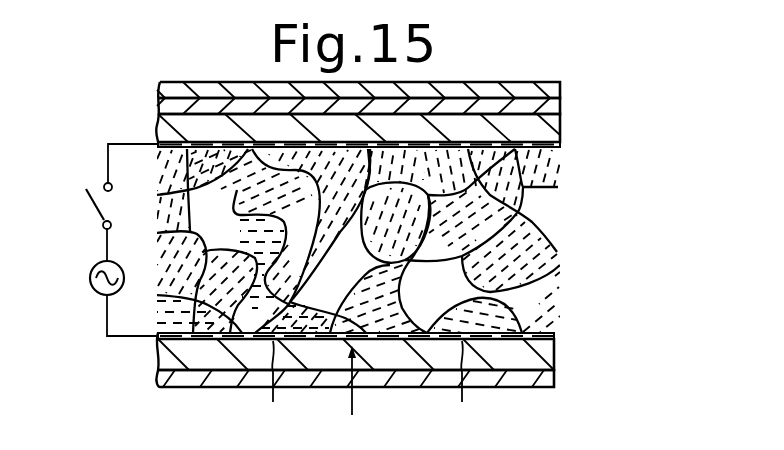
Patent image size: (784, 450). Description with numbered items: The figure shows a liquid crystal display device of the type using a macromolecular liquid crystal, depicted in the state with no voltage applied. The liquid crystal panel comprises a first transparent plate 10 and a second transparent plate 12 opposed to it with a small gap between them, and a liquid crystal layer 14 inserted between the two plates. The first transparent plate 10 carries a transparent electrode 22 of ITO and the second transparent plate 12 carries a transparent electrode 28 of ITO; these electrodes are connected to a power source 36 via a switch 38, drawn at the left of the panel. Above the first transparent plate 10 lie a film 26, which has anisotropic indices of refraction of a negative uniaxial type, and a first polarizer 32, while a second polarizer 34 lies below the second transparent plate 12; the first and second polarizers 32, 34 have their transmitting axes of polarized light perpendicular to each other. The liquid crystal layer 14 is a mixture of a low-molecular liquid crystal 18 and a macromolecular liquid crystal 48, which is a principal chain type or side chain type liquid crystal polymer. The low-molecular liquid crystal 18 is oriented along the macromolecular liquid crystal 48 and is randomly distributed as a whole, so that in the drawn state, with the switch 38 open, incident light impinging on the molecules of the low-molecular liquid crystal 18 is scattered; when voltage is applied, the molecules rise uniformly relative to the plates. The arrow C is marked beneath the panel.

The first transparent plate 10 is at (560, 128).
The second transparent plate 12 is at (555, 352).
The liquid crystal layer 14 is at (565, 272).
The low-molecular liquid crystal 18 is at (371, 385).
The transparent electrode 22 is at (158, 124).
The film 26 is at (560, 100).
The transparent electrode 28 is at (156, 346).
The first polarizer 32 is at (560, 84).
The second polarizer 34 is at (555, 382).
The power source 36 is at (89, 278).
The switch 38 is at (92, 203).
The macromolecular liquid crystal 48 is at (555, 187).
The cell direction arrow C is at (352, 402).